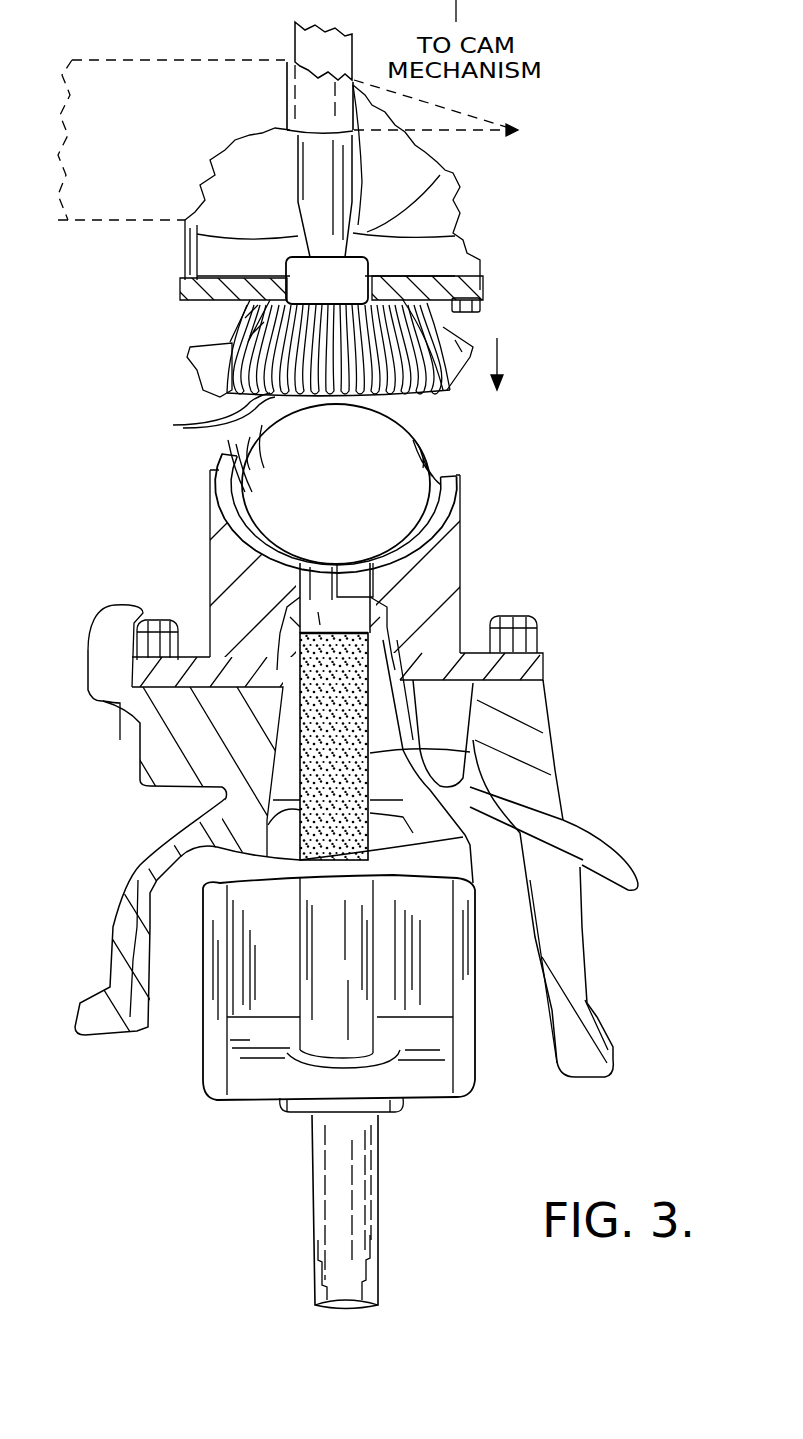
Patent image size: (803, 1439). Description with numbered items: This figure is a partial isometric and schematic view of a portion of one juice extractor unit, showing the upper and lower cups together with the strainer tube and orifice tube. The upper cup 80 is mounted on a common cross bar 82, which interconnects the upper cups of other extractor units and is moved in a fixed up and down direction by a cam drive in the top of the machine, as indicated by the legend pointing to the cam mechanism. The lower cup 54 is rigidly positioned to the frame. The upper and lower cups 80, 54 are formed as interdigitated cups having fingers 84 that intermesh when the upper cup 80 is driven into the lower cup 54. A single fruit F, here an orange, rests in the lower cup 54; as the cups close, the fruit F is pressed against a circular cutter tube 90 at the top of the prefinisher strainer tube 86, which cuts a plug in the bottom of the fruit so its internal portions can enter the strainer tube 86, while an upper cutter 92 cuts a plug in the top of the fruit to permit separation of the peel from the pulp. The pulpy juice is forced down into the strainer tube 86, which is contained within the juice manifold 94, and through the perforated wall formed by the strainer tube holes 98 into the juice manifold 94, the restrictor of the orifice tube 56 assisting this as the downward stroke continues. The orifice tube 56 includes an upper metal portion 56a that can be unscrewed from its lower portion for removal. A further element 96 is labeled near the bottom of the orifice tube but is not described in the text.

The cross bar 82 is at (193, 213).
The upper cutter 92 is at (453, 238).
The upper cup 80 is at (430, 338).
The fingers 84 is at (262, 438).
The fruit F is at (385, 440).
The lower cup 54 is at (457, 562).
The circular cutter tube 90 is at (290, 580).
The strainer tube holes 98 is at (327, 763).
The prefinisher strainer tube 86 is at (455, 757).
The juice manifold 94 is at (472, 970).
The upper metal portion of the orifice tube 56a is at (375, 1130).
The orifice tube 56 is at (385, 1188).
The shaft end 96 is at (312, 1288).